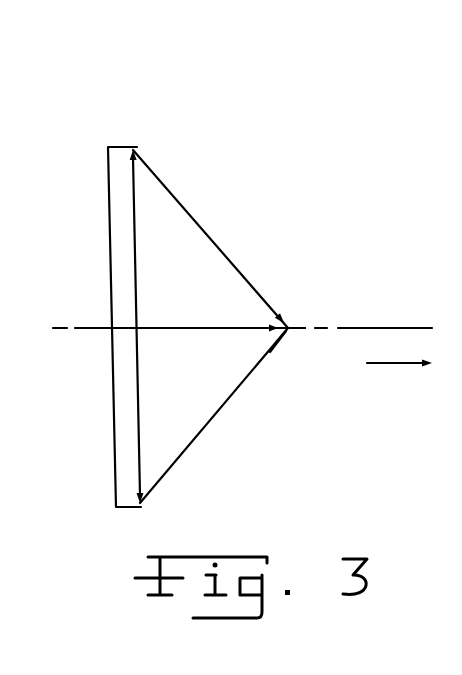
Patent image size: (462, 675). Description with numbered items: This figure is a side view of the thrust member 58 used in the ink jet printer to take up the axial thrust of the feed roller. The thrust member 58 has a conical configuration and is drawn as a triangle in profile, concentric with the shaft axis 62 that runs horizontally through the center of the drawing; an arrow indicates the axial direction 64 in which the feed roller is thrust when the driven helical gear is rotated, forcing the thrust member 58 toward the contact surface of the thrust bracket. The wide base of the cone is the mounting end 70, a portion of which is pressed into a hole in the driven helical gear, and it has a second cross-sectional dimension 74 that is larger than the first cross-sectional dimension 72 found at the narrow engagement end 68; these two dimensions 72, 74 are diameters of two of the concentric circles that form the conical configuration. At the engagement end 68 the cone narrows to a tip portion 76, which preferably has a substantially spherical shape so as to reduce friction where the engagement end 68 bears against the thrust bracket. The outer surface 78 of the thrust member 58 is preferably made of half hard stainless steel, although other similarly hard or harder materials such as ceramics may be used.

The thrust member 58 is at (213, 449).
The shaft axis 62 is at (378, 328).
The axial direction 64 is at (397, 364).
The engagement end 68 is at (276, 262).
The mounting end 70 is at (133, 112).
The first cross-sectional dimension 72 is at (136, 392).
The second cross-sectional dimension 74 is at (270, 329).
The tip portion 76 is at (290, 325).
The outer surface 78 is at (270, 352).